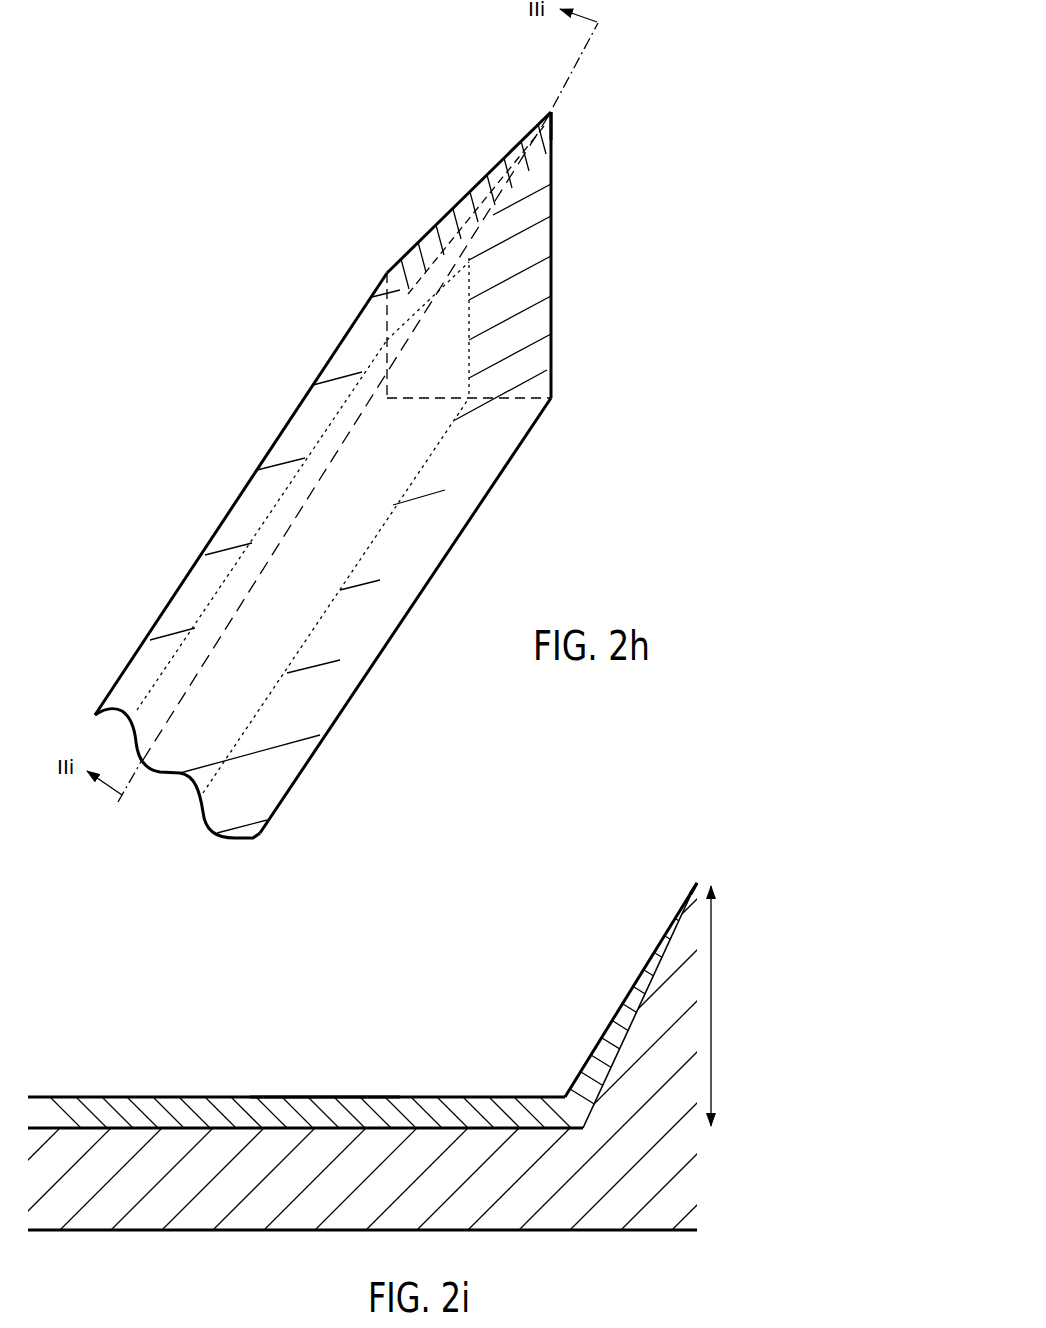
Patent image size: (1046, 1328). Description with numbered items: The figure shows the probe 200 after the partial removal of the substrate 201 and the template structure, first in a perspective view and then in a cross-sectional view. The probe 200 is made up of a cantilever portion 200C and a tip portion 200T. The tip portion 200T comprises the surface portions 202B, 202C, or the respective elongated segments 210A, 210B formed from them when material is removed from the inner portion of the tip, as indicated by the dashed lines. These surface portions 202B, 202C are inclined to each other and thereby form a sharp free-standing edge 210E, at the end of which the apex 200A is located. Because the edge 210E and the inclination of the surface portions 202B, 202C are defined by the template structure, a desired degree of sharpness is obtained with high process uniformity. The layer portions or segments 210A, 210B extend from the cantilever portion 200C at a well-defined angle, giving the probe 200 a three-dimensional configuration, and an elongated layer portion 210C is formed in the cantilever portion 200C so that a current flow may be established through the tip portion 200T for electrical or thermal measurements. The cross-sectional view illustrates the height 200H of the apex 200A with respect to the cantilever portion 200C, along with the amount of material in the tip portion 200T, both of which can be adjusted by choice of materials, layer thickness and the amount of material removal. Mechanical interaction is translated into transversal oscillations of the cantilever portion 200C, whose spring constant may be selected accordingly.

In FIG. 2h, the probe 200 is at (692, 61).
In FIG. 2i, the probe 200 is at (797, 814).
In FIG. 2h, the apex 200A is at (562, 106).
In FIG. 2i, the apex 200A is at (697, 879).
In FIG. 2h, the tip portion 200T is at (584, 163).
In FIG. 2i, the tip portion 200T is at (694, 937).
In FIG. 2i, the height 200H is at (712, 998).
In FIG. 2h, the cantilever portion 200C is at (201, 525).
In FIG. 2i, the cantilever portion 200C is at (312, 1093).
In FIG. 2h, the elongated layer portion 210A is at (540, 283).
In FIG. 2i, the elongated layer portion 210A is at (618, 1040).
In FIG. 2h, the elongated layer portion 210B is at (463, 215).
In FIG. 2i, the elongated layer portion 210C is at (432, 1095).
In FIG. 2h, the free-standing edge 210E is at (499, 212).
In FIG. 2h, the surface portion 202B is at (560, 369).
In FIG. 2h, the surface portion 202C is at (386, 259).
In FIG. 2i, the substrate 201 is at (683, 1205).